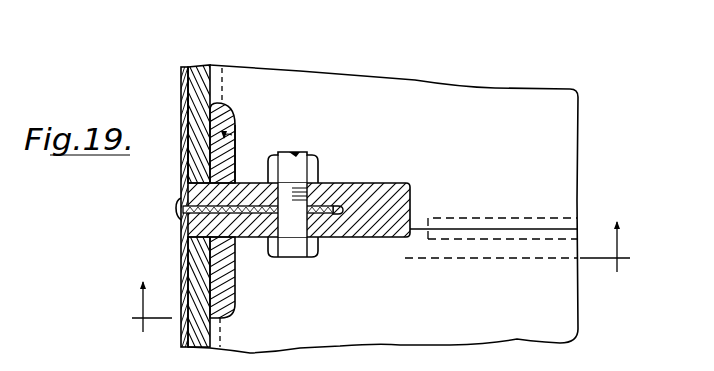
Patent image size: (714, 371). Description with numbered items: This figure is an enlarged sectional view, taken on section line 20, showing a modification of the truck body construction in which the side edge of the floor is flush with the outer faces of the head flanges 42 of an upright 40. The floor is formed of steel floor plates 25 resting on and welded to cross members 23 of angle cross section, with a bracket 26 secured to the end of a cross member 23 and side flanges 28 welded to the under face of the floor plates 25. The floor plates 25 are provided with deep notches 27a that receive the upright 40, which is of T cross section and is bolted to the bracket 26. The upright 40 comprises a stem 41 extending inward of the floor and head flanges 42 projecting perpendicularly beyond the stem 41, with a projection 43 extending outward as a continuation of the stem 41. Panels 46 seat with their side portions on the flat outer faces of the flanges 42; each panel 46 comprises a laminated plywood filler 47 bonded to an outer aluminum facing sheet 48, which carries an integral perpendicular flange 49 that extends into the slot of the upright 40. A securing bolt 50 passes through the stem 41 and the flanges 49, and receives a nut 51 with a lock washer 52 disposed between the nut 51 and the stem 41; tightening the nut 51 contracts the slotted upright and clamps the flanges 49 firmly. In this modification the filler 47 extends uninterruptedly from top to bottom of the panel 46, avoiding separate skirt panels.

The section line 20 is at (379, 277).
The cross member 23 is at (497, 223).
The floor plate 25 is at (512, 102).
The bracket 26 is at (442, 254).
The notch 27a is at (237, 122).
The side flange 28 is at (223, 84).
The upright 40 is at (413, 193).
The stem 41 is at (389, 193).
The flange 42 is at (226, 116).
The projection 43 is at (178, 210).
The panel 46 is at (180, 80).
The filler 47 is at (220, 55).
The facing sheet 48 is at (186, 108).
The flange 49 is at (245, 206).
The securing bolt 50 is at (299, 251).
The nut 51 is at (293, 158).
The lock washer 52 is at (308, 184).